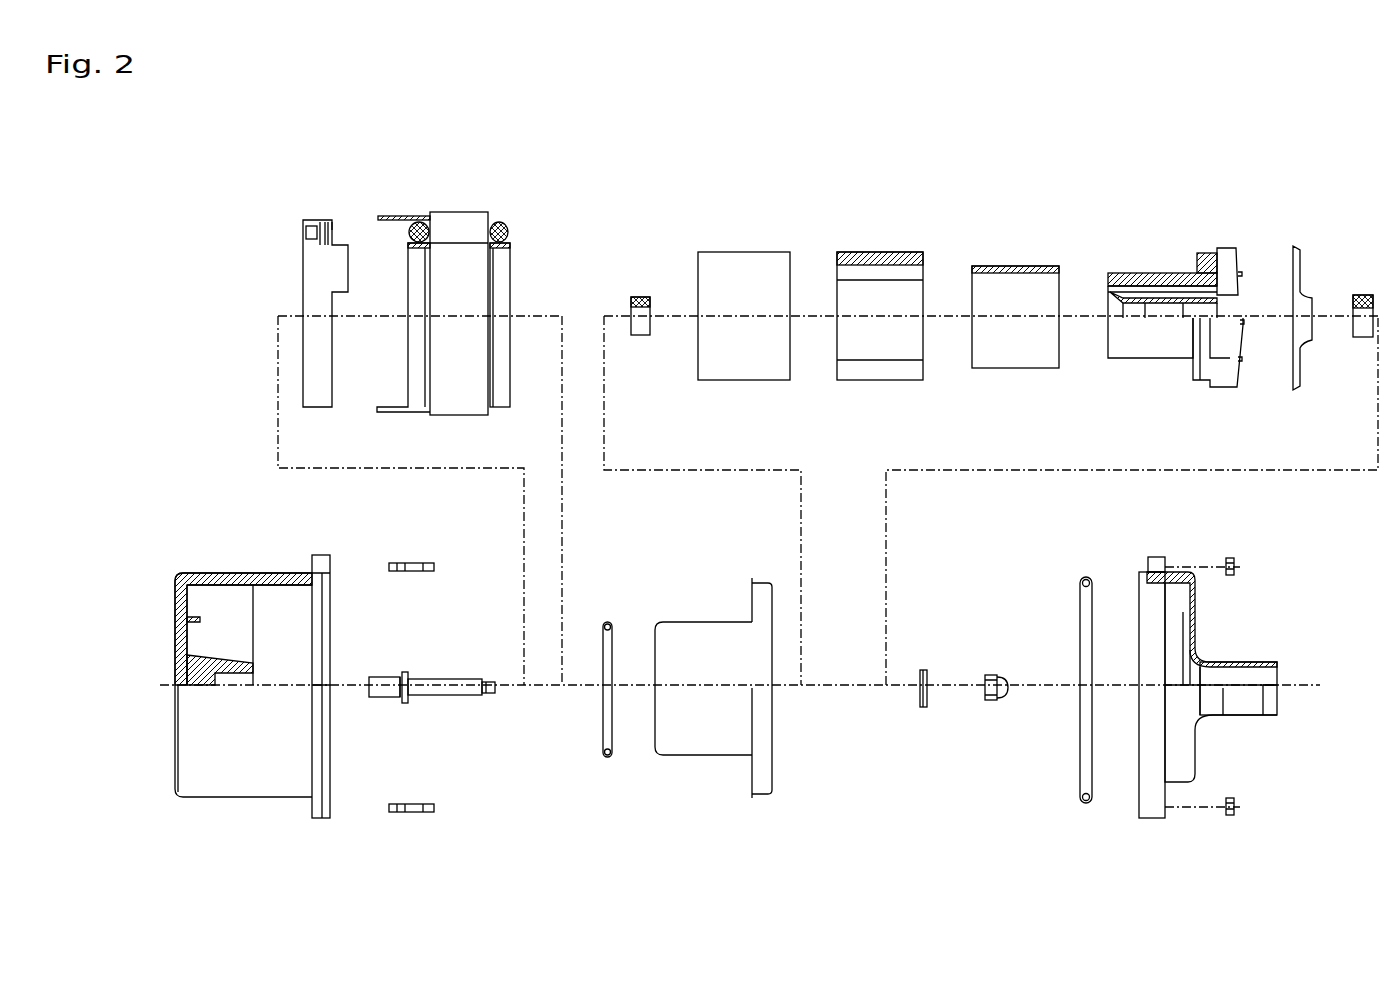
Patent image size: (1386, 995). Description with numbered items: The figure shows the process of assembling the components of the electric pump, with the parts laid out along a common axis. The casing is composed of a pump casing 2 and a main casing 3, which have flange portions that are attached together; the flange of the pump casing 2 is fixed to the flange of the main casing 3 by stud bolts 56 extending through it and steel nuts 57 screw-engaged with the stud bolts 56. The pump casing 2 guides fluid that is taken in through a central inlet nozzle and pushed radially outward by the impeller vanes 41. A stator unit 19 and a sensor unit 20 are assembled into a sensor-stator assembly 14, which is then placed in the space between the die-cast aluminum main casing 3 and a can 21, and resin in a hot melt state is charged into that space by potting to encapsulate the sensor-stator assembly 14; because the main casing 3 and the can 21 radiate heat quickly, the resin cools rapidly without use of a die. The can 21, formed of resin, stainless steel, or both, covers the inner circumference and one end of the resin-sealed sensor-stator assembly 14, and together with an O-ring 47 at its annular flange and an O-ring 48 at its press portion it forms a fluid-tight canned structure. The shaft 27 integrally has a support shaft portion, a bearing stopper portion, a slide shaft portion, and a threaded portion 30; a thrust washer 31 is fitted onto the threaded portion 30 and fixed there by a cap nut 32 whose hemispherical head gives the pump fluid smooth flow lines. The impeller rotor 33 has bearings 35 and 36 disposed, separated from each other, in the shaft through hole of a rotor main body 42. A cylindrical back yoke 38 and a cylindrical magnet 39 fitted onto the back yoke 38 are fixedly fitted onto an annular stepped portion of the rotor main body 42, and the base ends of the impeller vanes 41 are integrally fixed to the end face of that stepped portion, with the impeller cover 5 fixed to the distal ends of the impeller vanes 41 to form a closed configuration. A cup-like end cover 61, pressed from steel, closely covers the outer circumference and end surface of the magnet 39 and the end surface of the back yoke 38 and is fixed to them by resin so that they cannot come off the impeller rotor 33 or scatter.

The pump casing 2 is at (1225, 648).
The main casing 3 is at (240, 572).
The impeller cover 5 is at (1298, 242).
The sensor-stator assembly 14 is at (428, 160).
The stator unit 19 is at (447, 210).
The sensor unit 20 is at (318, 218).
The can 21 is at (705, 757).
The shaft 27 is at (436, 672).
The threaded portion 30 is at (495, 695).
The thrust washer 31 is at (920, 710).
The cap nut 32 is at (990, 705).
The impeller rotor 33 is at (1138, 210).
The bearing 35 is at (1365, 292).
The bearing 36 is at (639, 293).
The back yoke 38 is at (1013, 266).
The magnet 39 is at (876, 252).
The impeller vanes 41 is at (1227, 248).
The rotor main body 42 is at (1150, 270).
The O-ring 47 is at (1082, 578).
The O-ring 48 is at (610, 620).
The stud bolts 56 is at (437, 563).
The steel nuts 57 is at (1232, 558).
The end cover 61 is at (755, 252).